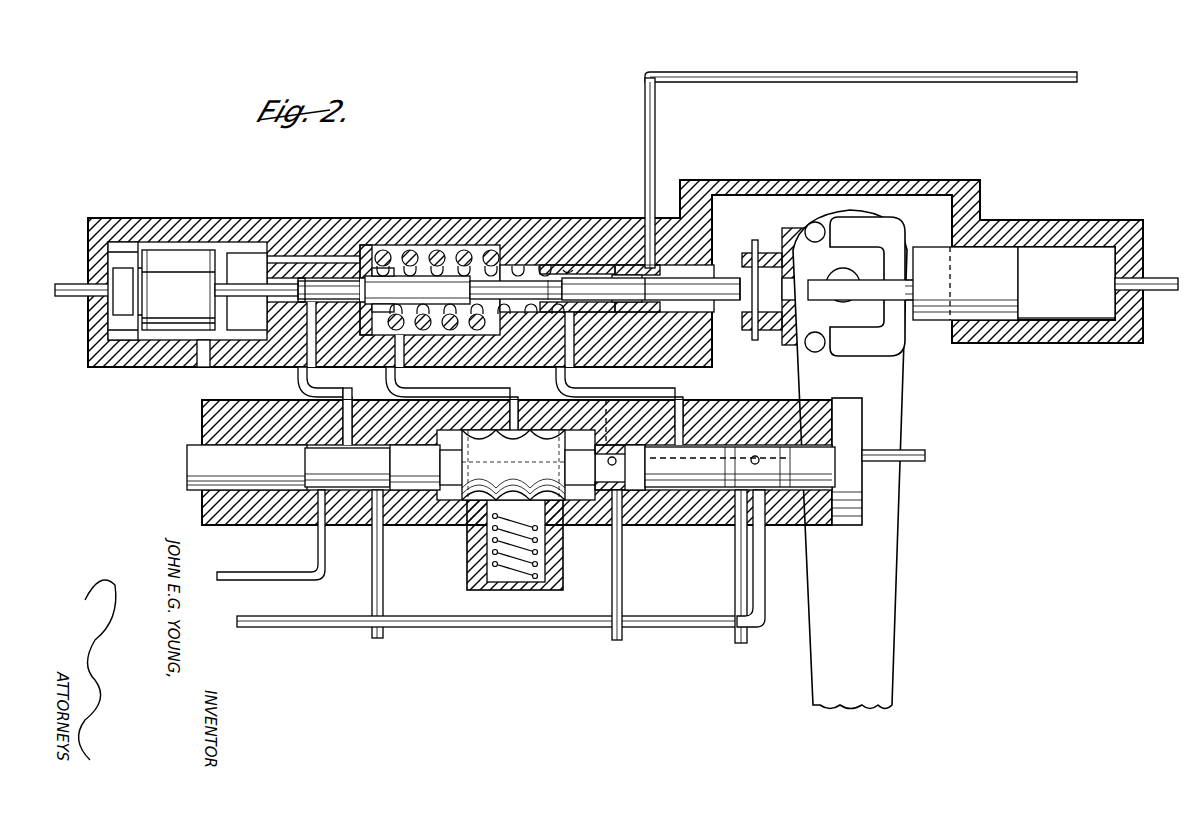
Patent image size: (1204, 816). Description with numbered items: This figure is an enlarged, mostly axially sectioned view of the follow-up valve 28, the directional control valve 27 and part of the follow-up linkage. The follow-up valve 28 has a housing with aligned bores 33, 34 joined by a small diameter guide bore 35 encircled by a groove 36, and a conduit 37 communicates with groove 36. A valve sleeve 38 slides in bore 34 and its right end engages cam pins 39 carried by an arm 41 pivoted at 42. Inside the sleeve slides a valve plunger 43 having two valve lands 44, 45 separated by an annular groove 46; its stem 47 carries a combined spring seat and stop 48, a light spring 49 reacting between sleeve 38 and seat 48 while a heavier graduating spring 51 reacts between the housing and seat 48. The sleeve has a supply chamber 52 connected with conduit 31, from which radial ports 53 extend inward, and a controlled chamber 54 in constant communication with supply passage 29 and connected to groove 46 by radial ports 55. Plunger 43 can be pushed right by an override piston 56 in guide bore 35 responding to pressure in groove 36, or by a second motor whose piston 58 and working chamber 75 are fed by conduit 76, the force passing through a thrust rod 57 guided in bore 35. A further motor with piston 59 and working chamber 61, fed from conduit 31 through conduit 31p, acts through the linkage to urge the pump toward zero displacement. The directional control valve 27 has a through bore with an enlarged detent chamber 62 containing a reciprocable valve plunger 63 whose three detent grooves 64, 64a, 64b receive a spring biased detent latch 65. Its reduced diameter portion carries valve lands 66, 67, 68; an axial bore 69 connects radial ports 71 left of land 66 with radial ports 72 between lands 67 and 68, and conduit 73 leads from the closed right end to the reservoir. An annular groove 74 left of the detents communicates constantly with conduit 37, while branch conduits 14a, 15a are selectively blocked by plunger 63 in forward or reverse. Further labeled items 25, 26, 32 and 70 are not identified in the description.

The branch conduit 14a is at (316, 555).
The branch conduit 15a is at (384, 547).
The pipe 25 is at (623, 553).
The pipe 26 is at (735, 562).
The directional control valve 27 is at (194, 524).
The follow-up valve 28 is at (266, 208).
The supply passage 29 is at (690, 388).
The conduit 31 is at (858, 72).
The conduit 31p is at (1156, 280).
The conduit 32 is at (520, 390).
The bore 33 is at (250, 330).
The bore 34 is at (560, 330).
The guide bore 35 is at (364, 245).
The groove 36 is at (326, 382).
The conduit 37 is at (363, 414).
The valve sleeve 38 is at (726, 255).
The cam pins 39 is at (818, 242).
The arm 41 is at (908, 380).
The pivot 42 is at (843, 285).
The valve plunger 43 is at (452, 276).
The valve land 44 is at (548, 278).
The valve land 45 is at (644, 270).
The annular groove 46 is at (598, 265).
The stem 47 is at (417, 290).
The combined spring seat and stop 48 is at (376, 268).
The light spring 49 is at (420, 268).
The graduating spring 51 is at (470, 270).
The supply chamber 52 is at (676, 240).
The radial ports 53 is at (640, 300).
The controlled chamber 54 is at (578, 305).
The radial ports 55 is at (590, 265).
The piston 56 is at (328, 281).
The thrust rod 57 is at (248, 274).
The piston 58 is at (196, 297).
The piston 59 is at (992, 282).
The working chamber 61 is at (1076, 282).
The detent chamber 62 is at (448, 525).
The valve plunger 63 is at (178, 471).
The detent groove 64 is at (560, 430).
The detent groove 64a is at (490, 430).
The detent groove 64b is at (545, 500).
The detent latch 65 is at (512, 565).
The valve land 66 is at (632, 445).
The valve land 67 is at (740, 445).
The valve land 68 is at (800, 438).
The axial bore 69 is at (690, 490).
The port 70 is at (609, 463).
The radial ports 71 is at (599, 415).
The radial ports 72 is at (760, 460).
The conduit 73 is at (925, 450).
The annular groove 74 is at (350, 490).
The working chamber 75 is at (118, 306).
The conduit 76 is at (82, 283).